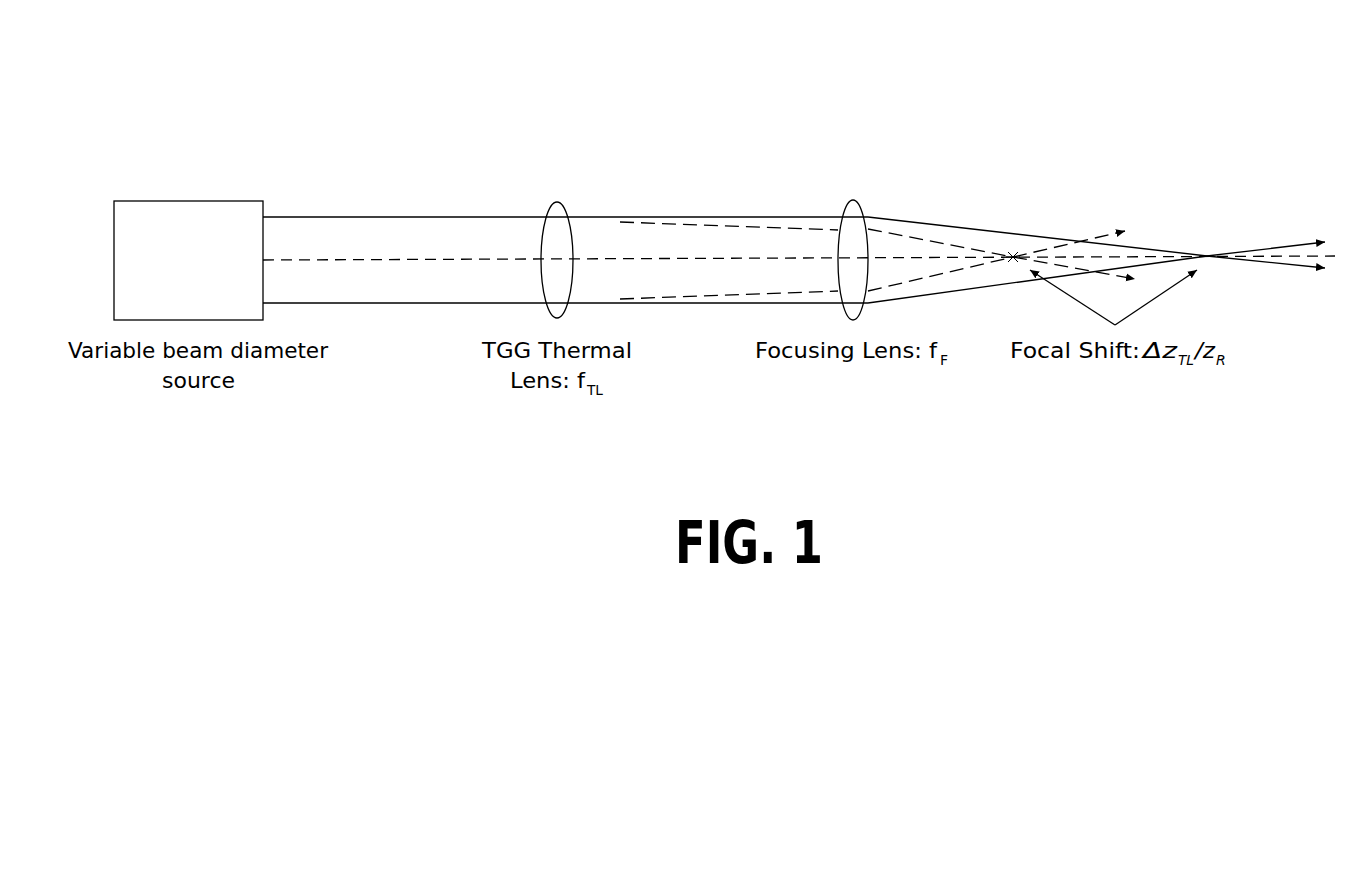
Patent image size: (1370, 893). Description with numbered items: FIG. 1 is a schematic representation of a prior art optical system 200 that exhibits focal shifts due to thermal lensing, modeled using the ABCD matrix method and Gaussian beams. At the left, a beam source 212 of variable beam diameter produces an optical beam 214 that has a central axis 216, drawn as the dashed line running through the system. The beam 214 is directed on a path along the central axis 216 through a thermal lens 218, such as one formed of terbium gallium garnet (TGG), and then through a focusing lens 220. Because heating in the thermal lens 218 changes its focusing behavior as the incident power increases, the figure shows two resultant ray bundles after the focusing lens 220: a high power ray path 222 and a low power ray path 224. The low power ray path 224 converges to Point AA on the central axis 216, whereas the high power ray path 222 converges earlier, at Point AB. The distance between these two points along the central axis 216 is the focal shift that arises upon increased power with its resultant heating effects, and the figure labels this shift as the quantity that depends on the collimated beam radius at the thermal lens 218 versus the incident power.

The optical system 200 is at (652, 136).
The beam source 212 is at (188, 260).
The optical beam 214 is at (327, 213).
The central axis 216 is at (475, 250).
The thermal lens 218 is at (553, 200).
The focusing lens 220 is at (833, 241).
The high power ray path 222 is at (952, 241).
The low power ray path 224 is at (1338, 248).
The Point AB is at (1015, 251).
The Point AA is at (1207, 252).